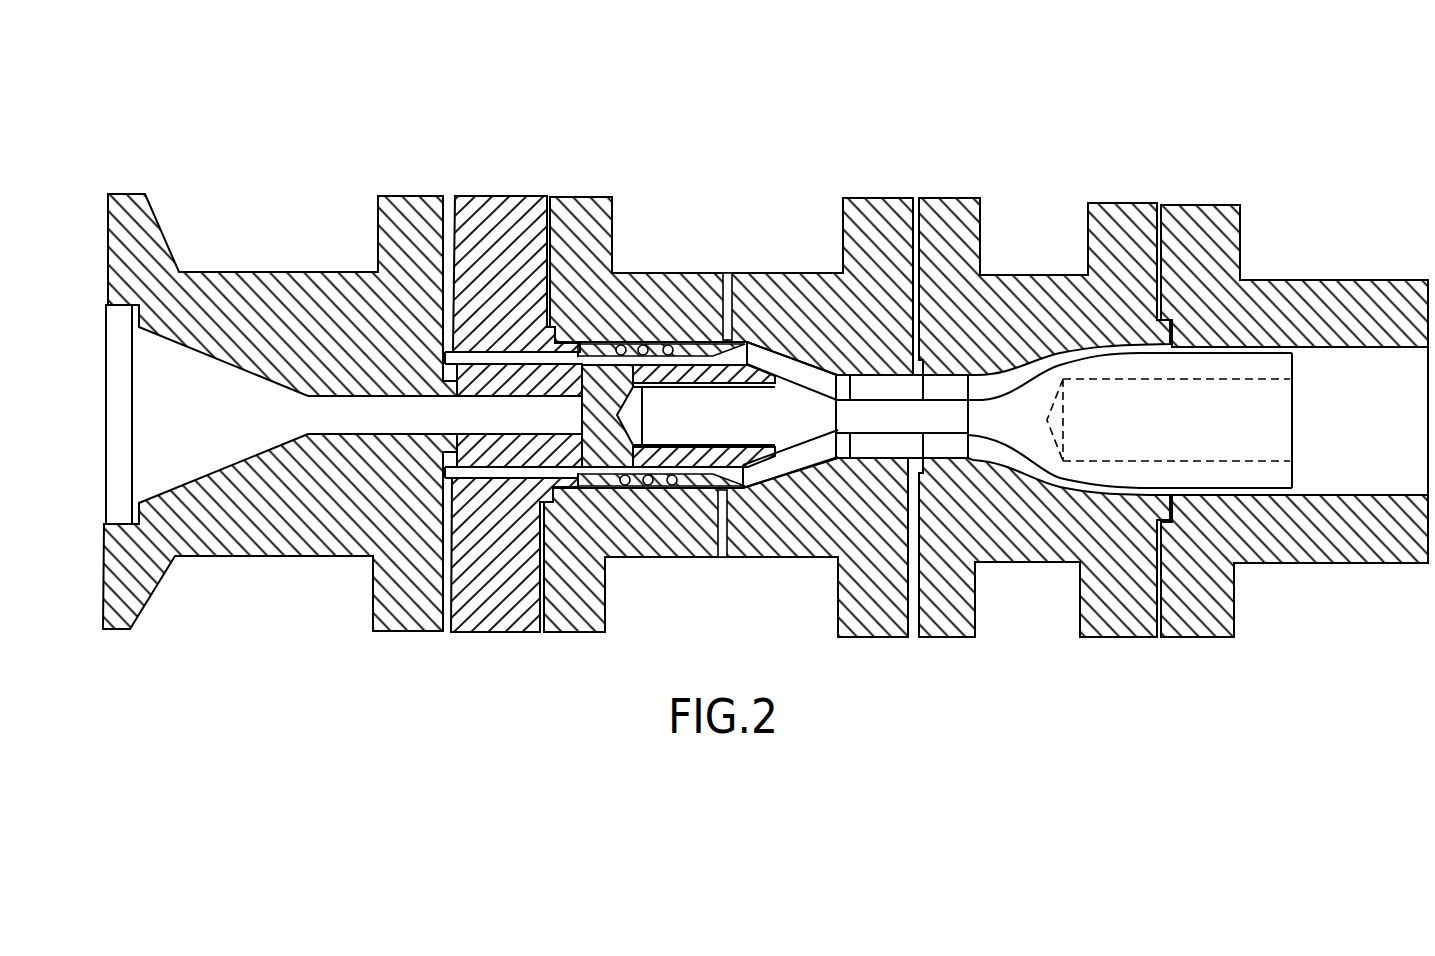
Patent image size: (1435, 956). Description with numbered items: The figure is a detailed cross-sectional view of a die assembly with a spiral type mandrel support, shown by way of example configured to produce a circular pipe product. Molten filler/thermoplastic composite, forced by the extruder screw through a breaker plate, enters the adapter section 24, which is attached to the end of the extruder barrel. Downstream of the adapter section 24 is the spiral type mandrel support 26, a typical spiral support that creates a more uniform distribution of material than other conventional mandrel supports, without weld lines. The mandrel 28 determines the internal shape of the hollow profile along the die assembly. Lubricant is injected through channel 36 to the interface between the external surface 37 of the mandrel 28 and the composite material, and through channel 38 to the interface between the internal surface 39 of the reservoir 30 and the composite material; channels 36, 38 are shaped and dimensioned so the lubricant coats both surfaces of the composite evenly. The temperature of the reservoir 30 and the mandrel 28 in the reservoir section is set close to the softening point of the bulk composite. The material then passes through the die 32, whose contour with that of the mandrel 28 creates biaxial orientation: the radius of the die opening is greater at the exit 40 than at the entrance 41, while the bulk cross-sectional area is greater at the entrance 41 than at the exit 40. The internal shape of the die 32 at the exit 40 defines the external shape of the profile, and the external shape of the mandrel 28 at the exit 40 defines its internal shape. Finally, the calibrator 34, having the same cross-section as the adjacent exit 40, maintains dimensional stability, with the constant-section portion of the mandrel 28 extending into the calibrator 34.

The adapter section 24 is at (256, 145).
The spiral type mandrel support 26 is at (522, 160).
The mandrel 28 is at (1203, 372).
The reservoir 30 is at (867, 163).
The die 32 is at (1030, 163).
The calibrator 34 is at (1323, 188).
The channel 36 is at (631, 356).
The external surface of the mandrel 37 is at (848, 372).
The channel 38 is at (728, 338).
The internal surface of reservoir 39 is at (875, 372).
The exit section of die 40 is at (1128, 342).
The entrance of die 41 is at (977, 375).